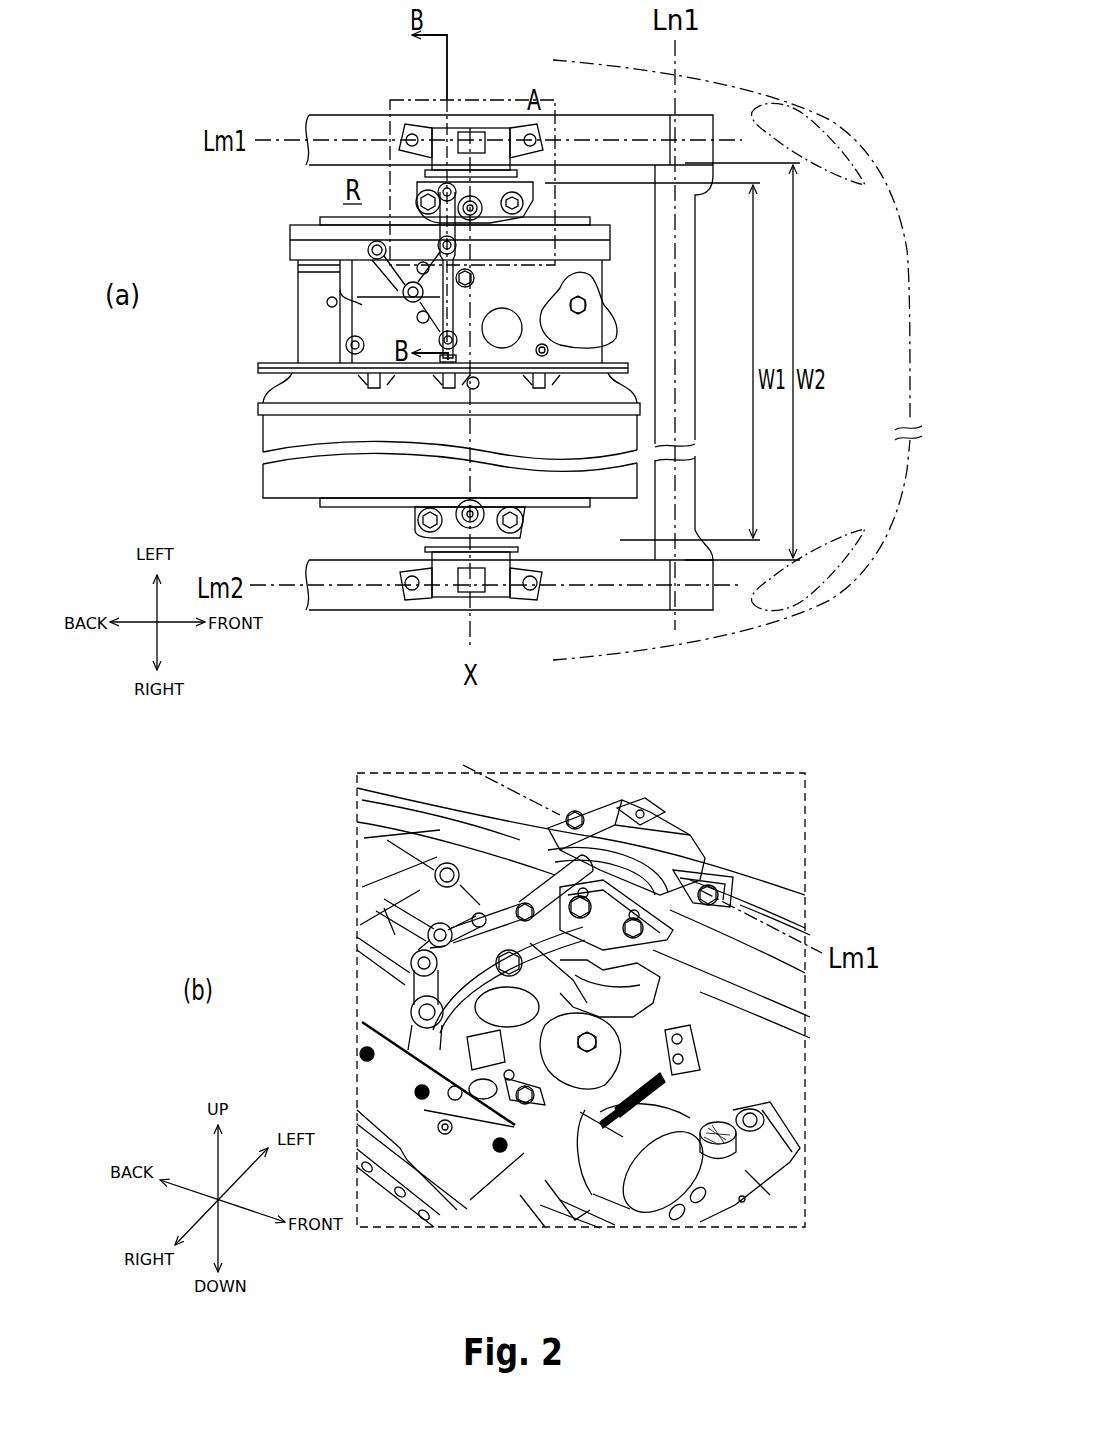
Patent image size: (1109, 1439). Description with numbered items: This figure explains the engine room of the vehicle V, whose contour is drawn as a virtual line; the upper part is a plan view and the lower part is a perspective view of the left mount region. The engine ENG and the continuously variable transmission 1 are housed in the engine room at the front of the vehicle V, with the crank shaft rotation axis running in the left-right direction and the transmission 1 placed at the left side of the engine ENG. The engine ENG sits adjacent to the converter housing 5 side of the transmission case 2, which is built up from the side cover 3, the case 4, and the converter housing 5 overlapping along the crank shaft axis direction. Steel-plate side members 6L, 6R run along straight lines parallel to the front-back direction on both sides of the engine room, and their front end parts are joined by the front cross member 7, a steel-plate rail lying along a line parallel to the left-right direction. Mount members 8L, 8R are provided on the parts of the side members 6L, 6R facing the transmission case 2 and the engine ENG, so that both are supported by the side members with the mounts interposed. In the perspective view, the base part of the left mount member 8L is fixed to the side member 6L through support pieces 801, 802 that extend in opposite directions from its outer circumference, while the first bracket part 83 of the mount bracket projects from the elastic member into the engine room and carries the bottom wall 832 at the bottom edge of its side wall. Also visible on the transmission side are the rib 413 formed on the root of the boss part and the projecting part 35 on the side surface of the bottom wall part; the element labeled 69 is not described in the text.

The continuously variable transmission 1 is at (481, 743).
The transmission case 2 is at (492, 748).
The side cover 3 is at (290, 233).
The case 4 is at (296, 305).
The converter housing 5 is at (418, 799).
The side member 6L is at (312, 112).
The side member 6R is at (340, 612).
The front cross member 7 is at (697, 350).
The mount member 8L is at (432, 127).
The mount member 8R is at (437, 600).
The projecting part 35 is at (610, 988).
The frame surface 69 is at (780, 915).
The first bracket part 83 is at (708, 963).
The rib 413 is at (400, 962).
The support piece 801 is at (710, 868).
The support piece 802 is at (600, 802).
The bottom wall 832 is at (690, 940).
The engine ENG is at (258, 440).
The vehicle V is at (793, 622).